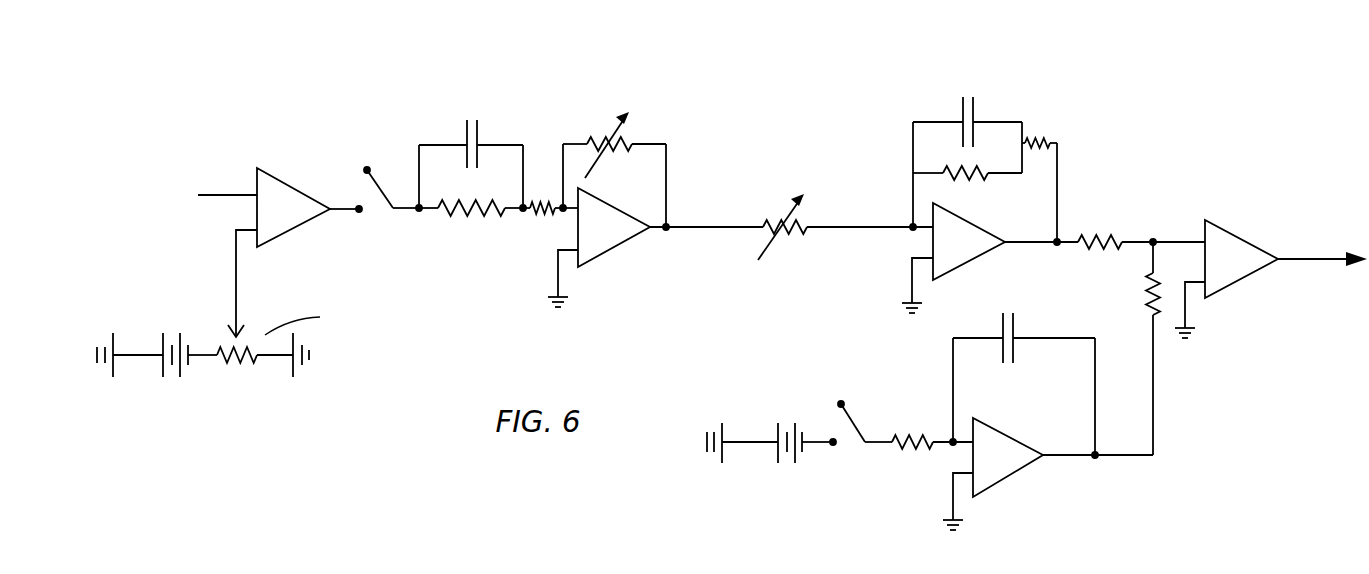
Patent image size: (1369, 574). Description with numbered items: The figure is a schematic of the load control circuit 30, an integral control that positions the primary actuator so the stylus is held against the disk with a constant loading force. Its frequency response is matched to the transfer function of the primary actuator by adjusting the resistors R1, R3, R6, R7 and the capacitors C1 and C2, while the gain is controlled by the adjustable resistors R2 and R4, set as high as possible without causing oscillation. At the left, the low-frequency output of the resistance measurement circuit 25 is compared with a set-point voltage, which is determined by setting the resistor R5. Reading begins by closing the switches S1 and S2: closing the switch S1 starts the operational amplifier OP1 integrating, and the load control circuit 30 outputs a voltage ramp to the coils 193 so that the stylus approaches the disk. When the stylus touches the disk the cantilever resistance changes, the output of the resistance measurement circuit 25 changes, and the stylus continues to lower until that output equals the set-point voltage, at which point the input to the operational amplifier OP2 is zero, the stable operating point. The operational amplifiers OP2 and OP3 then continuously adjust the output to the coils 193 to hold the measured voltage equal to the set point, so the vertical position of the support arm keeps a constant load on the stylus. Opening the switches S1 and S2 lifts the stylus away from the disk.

The load control circuit 30 is at (762, 102).
The resistance measurement circuit 25 is at (248, 198).
The resistor R5 is at (258, 345).
The switch S2 is at (387, 208).
The capacitor C1 is at (471, 147).
The resistor R1 is at (471, 222).
The resistor R6 is at (550, 187).
The resistor R2 is at (614, 155).
The operational amplifier OP2 is at (655, 247).
The resistor R4 is at (845, 209).
The capacitor C2 is at (967, 149).
The resistor R3 is at (967, 182).
The resistor R7 is at (1039, 175).
The operational amplifier OP3 is at (990, 258).
The coil 193 is at (1222, 337).
The switch S1 is at (840, 444).
The operational amplifier OP1 is at (1048, 421).